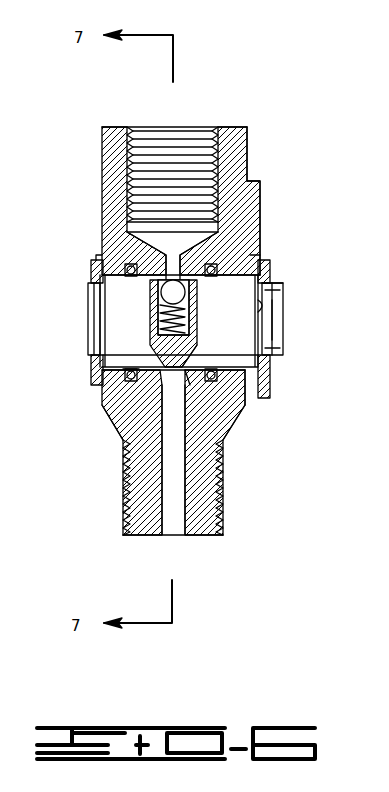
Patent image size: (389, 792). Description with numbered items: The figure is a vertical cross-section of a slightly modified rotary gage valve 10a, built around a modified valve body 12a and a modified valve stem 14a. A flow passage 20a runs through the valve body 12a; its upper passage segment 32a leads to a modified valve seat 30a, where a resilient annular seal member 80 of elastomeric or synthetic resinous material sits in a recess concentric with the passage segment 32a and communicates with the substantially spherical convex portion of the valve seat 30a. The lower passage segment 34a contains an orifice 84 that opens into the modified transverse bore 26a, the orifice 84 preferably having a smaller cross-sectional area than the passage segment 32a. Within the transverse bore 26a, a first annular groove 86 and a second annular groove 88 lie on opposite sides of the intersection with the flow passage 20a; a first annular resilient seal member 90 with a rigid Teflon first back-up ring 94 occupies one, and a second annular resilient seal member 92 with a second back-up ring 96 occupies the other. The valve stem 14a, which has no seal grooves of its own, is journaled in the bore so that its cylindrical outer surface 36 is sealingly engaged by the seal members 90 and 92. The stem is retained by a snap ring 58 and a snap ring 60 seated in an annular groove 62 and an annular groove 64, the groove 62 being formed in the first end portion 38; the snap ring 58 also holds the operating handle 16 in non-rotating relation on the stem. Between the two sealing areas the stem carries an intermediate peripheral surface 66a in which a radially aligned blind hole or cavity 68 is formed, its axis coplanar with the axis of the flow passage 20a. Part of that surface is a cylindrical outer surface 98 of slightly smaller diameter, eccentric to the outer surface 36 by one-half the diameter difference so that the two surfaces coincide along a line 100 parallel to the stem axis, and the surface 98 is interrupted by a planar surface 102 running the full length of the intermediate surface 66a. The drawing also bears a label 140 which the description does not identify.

The rotary gage valve 10a is at (268, 100).
The valve body 12a is at (247, 152).
The operating handle 16 is at (261, 190).
The resilient annular seal member 80 is at (262, 217).
The valve seat 30a is at (262, 230).
The cylindrical outer surface 98 is at (262, 247).
The cylindrical outer surface 36 is at (270, 268).
The snap ring 58 is at (276, 280).
The valve stem 14a is at (283, 294).
The first end portion 38 is at (275, 309).
The annular groove 62 is at (280, 330).
The planar surface 102 is at (270, 352).
The first back-up ring 94 is at (250, 385).
The first annular groove 86 is at (243, 396).
The first annular resilient seal member 90 is at (225, 400).
The line of coincidence 100 is at (215, 415).
The passage segment 32a is at (127, 233).
The intermediate peripheral surface 66a is at (125, 265).
The snap ring 60 is at (91, 269).
The transverse bore 26a is at (104, 300).
The annular groove 64 is at (150, 290).
The blind hole or cavity 68 is at (160, 320).
The retainer 140 is at (100, 360).
The second back-up ring 96 is at (97, 382).
The second annular groove 88 is at (127, 378).
The second annular resilient seal member 92 is at (103, 405).
The orifice 84 is at (122, 428).
The lower passage segment 34a is at (130, 478).
The flow passage 20a is at (170, 497).